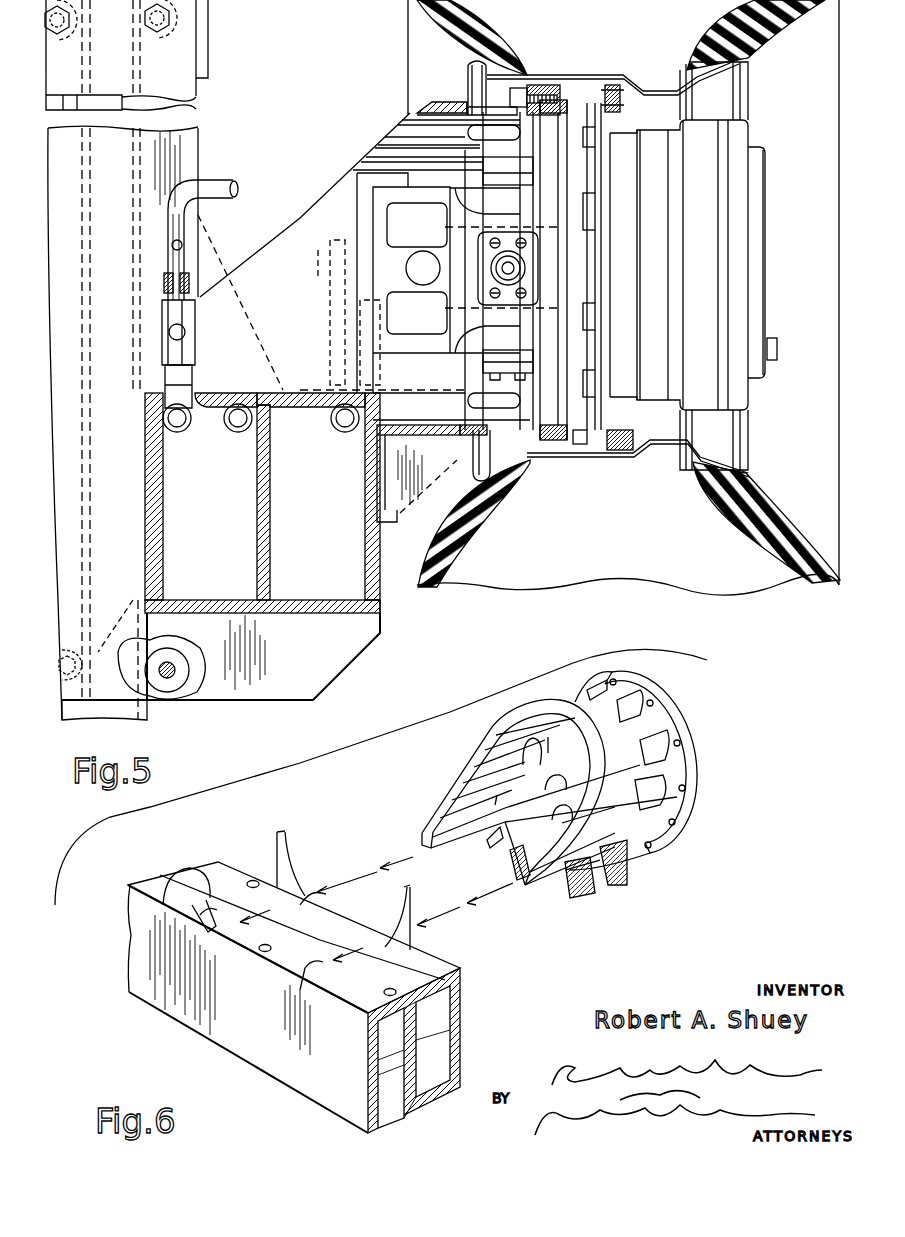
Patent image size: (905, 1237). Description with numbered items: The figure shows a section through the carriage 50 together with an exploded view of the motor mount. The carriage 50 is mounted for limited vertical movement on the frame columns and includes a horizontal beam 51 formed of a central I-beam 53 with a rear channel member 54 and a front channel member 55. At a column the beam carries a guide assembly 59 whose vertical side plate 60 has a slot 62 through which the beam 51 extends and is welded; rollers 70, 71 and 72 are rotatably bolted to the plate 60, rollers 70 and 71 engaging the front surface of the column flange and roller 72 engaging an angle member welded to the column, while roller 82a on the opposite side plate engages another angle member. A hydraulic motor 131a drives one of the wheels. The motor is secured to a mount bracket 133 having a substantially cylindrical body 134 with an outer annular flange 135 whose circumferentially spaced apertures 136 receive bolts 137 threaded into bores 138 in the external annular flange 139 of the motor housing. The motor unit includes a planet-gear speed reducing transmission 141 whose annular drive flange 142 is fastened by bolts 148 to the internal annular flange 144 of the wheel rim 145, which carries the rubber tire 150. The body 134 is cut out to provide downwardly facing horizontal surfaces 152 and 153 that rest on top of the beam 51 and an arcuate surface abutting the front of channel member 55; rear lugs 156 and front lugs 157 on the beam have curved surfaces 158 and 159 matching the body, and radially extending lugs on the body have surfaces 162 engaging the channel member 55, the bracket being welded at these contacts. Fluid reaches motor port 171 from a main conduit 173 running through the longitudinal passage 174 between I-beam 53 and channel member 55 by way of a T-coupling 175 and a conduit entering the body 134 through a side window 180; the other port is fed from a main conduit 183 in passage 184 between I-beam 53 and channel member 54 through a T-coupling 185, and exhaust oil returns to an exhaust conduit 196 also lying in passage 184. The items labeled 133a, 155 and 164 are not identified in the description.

In FIG. 5, the carriage 50 is at (217, 149).
In FIG. 5, the roller 70 is at (160, 38).
In FIG. 5, the roller 72 is at (57, 42).
In FIG. 5, the roller 71 is at (181, 662).
In FIG. 5, the roller 82a is at (115, 623).
In FIG. 5, the horizontal beam 51 is at (363, 615).
In FIG. 5, the central I-beam 53 is at (257, 551).
In FIG. 5, the rear channel member 54 is at (158, 553).
In FIG. 5, the front channel member 55 is at (365, 548).
In FIG. 5, the guide assembly 59 is at (278, 710).
In FIG. 5, the side plate 60 is at (322, 688).
In FIG. 5, the slot 62 is at (278, 613).
In FIG. 5, the hydraulic motor 131a is at (360, 181).
In FIG. 5, the casing top plate 133a is at (433, 93).
In FIG. 5, the annular flange 135 is at (528, 455).
In FIG. 6, the annular flange 135 is at (676, 710).
In FIG. 5, the bolts 137 is at (548, 445).
In FIG. 5, the threaded bores 138 is at (587, 441).
In FIG. 5, the external annular flange 139 is at (548, 262).
In FIG. 5, the speed reducing transmission 141 is at (752, 128).
In FIG. 5, the drive flange 142 is at (605, 197).
In FIG. 5, the internal annular flange 144 is at (605, 75).
In FIG. 5, the rim 145 is at (600, 84).
In FIG. 5, the bolts 148 is at (565, 88).
In FIG. 5, the rubber tire 150 is at (770, 496).
In FIG. 5, the port 171 is at (490, 268).
In FIG. 5, the main hydraulic fluid conduit 173 is at (345, 435).
In FIG. 5, the longitudinal passage 174 is at (334, 512).
In FIG. 5, the T-coupling 175 is at (328, 383).
In FIG. 5, the main conduit 183 is at (238, 433).
In FIG. 5, the passage 184 is at (222, 507).
In FIG. 5, the T-coupling 185 is at (186, 382).
In FIG. 5, the exhaust conduit 196 is at (197, 433).
In FIG. 6, the mount bracket 133 is at (473, 734).
In FIG. 6, the cylindrical body 134 is at (458, 787).
In FIG. 6, the apertures 136 is at (700, 750).
In FIG. 6, the horizontal surface 152 is at (455, 840).
In FIG. 6, the horizontal surface 153 is at (535, 880).
In FIG. 6, the tab 155 is at (510, 850).
In FIG. 6, the rear lugs 156 is at (131, 930).
In FIG. 6, the front lugs 157 is at (277, 855).
In FIG. 6, the surfaces 158 is at (190, 870).
In FIG. 6, the surfaces 159 is at (290, 862).
In FIG. 6, the surfaces 162 is at (606, 884).
In FIG. 6, the tab 164 is at (575, 903).
In FIG. 6, the side window 180 is at (494, 810).